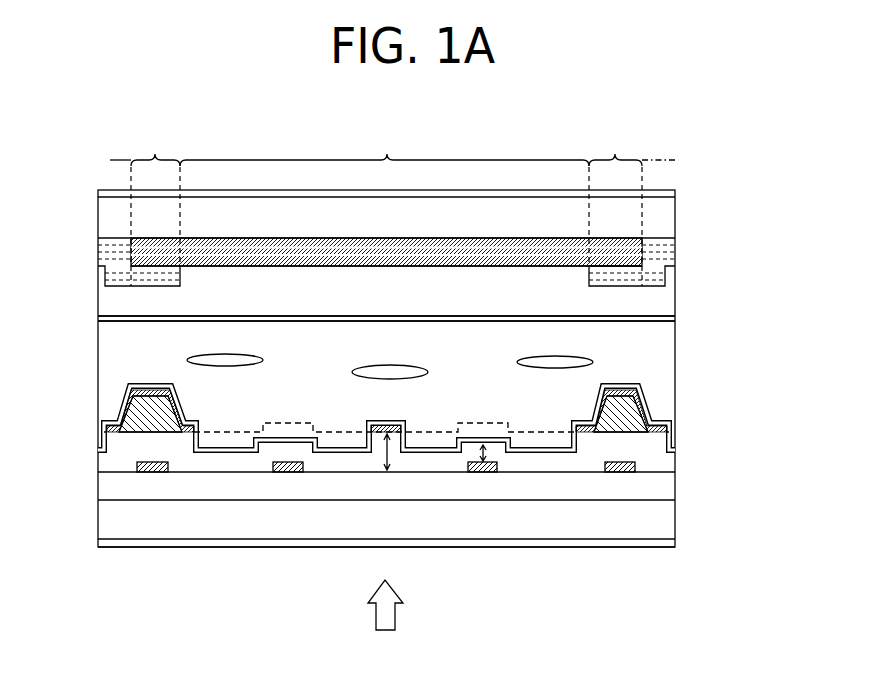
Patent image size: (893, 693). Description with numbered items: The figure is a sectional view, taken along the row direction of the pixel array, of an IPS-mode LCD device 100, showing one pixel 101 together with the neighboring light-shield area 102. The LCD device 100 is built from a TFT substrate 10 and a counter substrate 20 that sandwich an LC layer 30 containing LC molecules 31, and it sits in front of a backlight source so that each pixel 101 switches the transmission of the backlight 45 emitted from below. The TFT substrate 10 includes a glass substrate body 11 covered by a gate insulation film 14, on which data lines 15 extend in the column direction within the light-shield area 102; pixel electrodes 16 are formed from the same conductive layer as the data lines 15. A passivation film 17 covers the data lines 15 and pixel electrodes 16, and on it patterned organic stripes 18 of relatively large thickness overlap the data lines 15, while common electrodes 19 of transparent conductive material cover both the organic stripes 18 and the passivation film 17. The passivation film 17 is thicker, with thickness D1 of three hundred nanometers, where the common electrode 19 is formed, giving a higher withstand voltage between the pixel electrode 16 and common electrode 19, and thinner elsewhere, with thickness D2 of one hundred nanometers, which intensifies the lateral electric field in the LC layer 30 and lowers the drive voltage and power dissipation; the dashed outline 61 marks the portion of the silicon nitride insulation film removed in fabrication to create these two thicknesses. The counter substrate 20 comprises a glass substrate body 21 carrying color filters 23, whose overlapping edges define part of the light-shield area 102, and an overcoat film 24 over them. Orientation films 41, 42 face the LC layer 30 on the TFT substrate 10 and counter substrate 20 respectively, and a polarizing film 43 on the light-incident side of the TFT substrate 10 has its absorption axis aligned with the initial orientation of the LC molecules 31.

The LCD device 100 is at (551, 99).
The pixel 101 is at (384, 145).
The light-shield area 102 is at (392, 205).
The TFT substrate 10 is at (436, 508).
The glass substrate body 11 is at (658, 523).
The gate insulation film 14 is at (658, 493).
The data line 15 is at (146, 473).
The pixel electrode 16 is at (283, 473).
The passivation film 17 is at (658, 463).
The patterned organic stripe 18 is at (625, 413).
The common electrode 19 is at (180, 405).
The counter substrate 20 is at (439, 222).
The glass substrate body 21 is at (658, 223).
The color filter 23 is at (658, 250).
The overcoat film 24 is at (409, 296).
The LC layer 30 is at (409, 350).
The LC molecule 31 is at (392, 365).
The orientation film 41 is at (103, 418).
The orientation film 42 is at (128, 320).
The polarizing film 43 is at (104, 549).
The backlight 45 is at (396, 612).
The removed portion of transparent insulation film 61 is at (428, 428).
The thickness of larger-thickness portion of passivation film D1 is at (388, 452).
The thickness of smaller-thickness portion of passivation film D2 is at (486, 454).